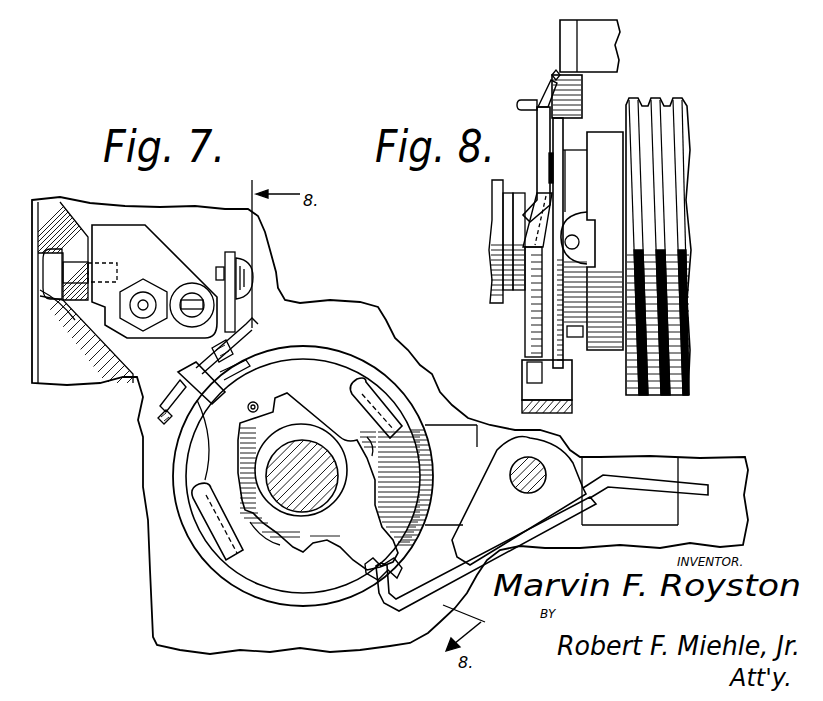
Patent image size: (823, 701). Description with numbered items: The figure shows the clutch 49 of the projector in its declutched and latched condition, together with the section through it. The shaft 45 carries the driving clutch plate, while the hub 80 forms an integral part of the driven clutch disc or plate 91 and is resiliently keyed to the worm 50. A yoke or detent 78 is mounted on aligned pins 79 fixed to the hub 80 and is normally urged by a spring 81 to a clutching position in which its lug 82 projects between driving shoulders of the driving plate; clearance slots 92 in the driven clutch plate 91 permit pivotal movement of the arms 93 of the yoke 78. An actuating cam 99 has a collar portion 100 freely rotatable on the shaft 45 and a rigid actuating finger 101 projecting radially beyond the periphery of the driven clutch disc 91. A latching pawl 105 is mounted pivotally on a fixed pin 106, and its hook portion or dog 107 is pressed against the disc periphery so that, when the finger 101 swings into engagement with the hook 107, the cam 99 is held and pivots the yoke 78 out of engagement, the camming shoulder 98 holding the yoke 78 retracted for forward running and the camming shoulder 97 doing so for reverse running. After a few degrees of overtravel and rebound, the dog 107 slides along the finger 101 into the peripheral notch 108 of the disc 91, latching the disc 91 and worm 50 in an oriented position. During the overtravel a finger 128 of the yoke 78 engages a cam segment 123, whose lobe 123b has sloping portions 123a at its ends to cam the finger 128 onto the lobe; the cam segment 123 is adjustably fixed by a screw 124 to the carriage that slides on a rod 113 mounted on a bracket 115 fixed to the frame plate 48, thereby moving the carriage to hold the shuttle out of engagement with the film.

In FIG. 7, the shaft 45 is at (277, 474).
In FIG. 7, the frame plate 48 is at (153, 564).
In FIG. 7, the clutch 49 is at (140, 490).
In FIG. 8, the worm 50 is at (670, 223).
In FIG. 7, the yoke or detent 78 is at (303, 377).
In FIG. 8, the yoke or detent 78 is at (540, 137).
In FIG. 8, the pins 79 is at (580, 243).
In FIG. 8, the hub 80 is at (577, 337).
In FIG. 8, the spring 81 is at (552, 175).
In FIG. 7, the lug 82 is at (250, 348).
In FIG. 8, the lug 82 is at (520, 102).
In FIG. 7, the driven clutch disc or plate 91 is at (347, 367).
In FIG. 8, the driven clutch disc or plate 91 is at (552, 318).
In FIG. 7, the clearance slots 92 is at (364, 377).
In FIG. 8, the arms 93 is at (567, 227).
In FIG. 7, the camming shoulder 97 is at (250, 524).
In FIG. 7, the camming shoulder 98 is at (368, 440).
In FIG. 8, the camming shoulder 98 is at (517, 222).
In FIG. 7, the actuating cam 99 is at (350, 503).
In FIG. 8, the actuating cam 99 is at (530, 307).
In FIG. 7, the collar portion 100 is at (297, 430).
In FIG. 8, the collar portion 100 is at (533, 195).
In FIG. 7, the actuating finger 101 is at (380, 543).
In FIG. 8, the actuating finger 101 is at (540, 375).
In FIG. 7, the latching pawl 105 is at (523, 523).
In FIG. 8, the latching pawl 105 is at (573, 410).
In FIG. 7, the fixed pin 106 is at (537, 470).
In FIG. 7, the hook portion or dog 107 is at (377, 594).
In FIG. 8, the hook portion or dog 107 is at (522, 390).
In FIG. 7, the peripheral notch 108 is at (368, 572).
In FIG. 7, the rod 113 is at (193, 290).
In FIG. 7, the bracket 115 is at (150, 240).
In FIG. 7, the cam segment 123 is at (250, 303).
In FIG. 8, the cam segment 123 is at (583, 97).
In FIG. 7, the sloping portions 123a is at (258, 328).
In FIG. 8, the sloping portions 123a is at (555, 74).
In FIG. 7, the lobe 123b is at (167, 400).
In FIG. 7, the screw 124 is at (253, 270).
In FIG. 8, the screw 124 is at (590, 46).
In FIG. 7, the finger 128 is at (190, 369).
In FIG. 8, the finger 128 is at (548, 90).